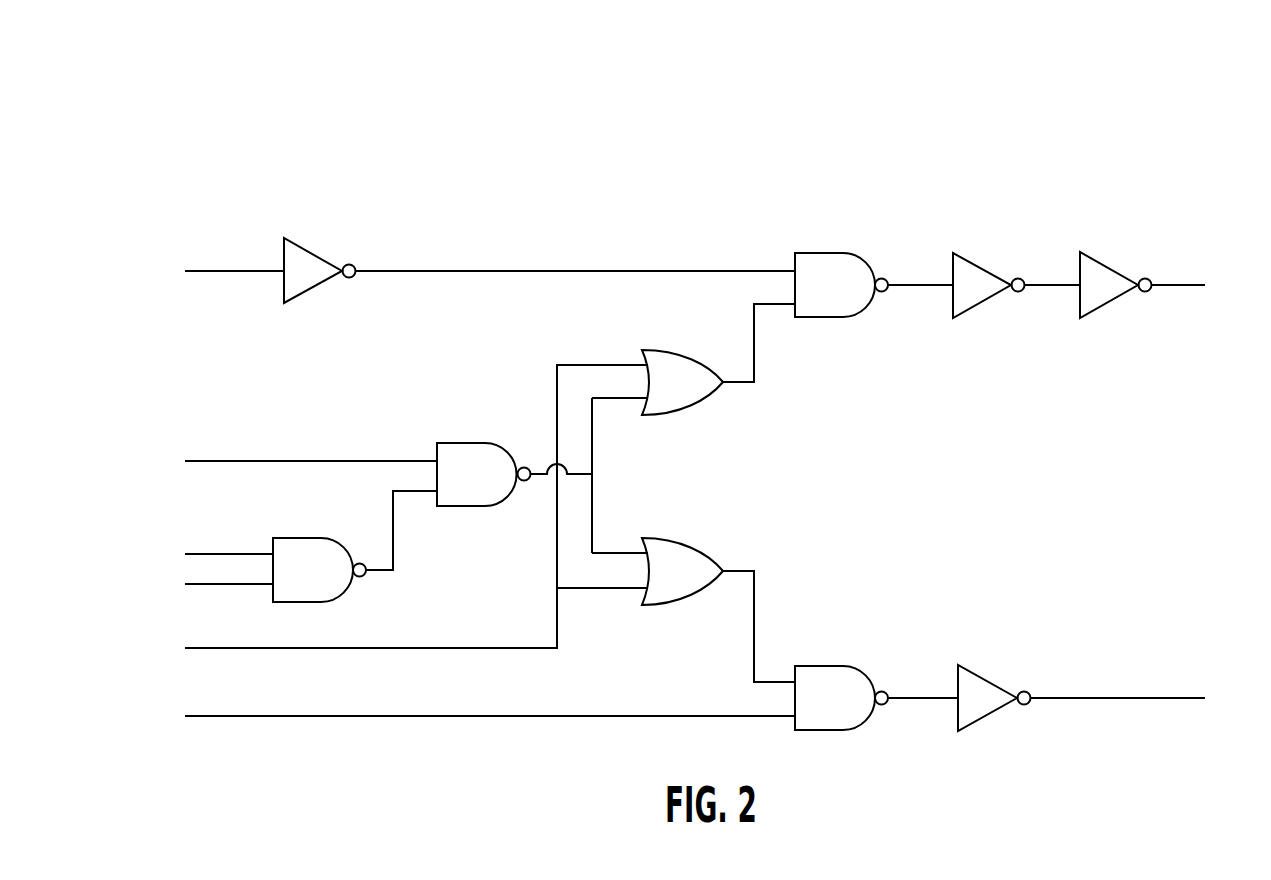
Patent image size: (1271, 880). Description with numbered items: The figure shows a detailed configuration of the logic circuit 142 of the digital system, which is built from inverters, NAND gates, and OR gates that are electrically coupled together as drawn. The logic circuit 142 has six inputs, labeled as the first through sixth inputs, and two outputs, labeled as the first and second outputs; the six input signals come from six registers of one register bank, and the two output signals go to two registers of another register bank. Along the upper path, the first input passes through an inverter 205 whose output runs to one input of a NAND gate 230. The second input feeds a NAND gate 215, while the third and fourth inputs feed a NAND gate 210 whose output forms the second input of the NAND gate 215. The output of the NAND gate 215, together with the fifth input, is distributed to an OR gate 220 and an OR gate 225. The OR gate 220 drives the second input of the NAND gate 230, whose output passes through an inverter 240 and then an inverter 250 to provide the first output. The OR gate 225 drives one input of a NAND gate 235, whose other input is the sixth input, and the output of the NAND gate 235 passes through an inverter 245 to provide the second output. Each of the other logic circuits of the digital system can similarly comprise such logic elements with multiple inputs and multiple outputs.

The logic circuit 142 is at (1106, 155).
The inverter 205 is at (316, 270).
The NAND gate 210 is at (301, 554).
The NAND gate 215 is at (468, 465).
The OR gate 220 is at (668, 368).
The OR gate 225 is at (688, 565).
The NAND gate 230 is at (827, 268).
The NAND gate 235 is at (835, 688).
The inverter 240 is at (985, 284).
The inverter 245 is at (990, 694).
The inverter 250 is at (1107, 284).